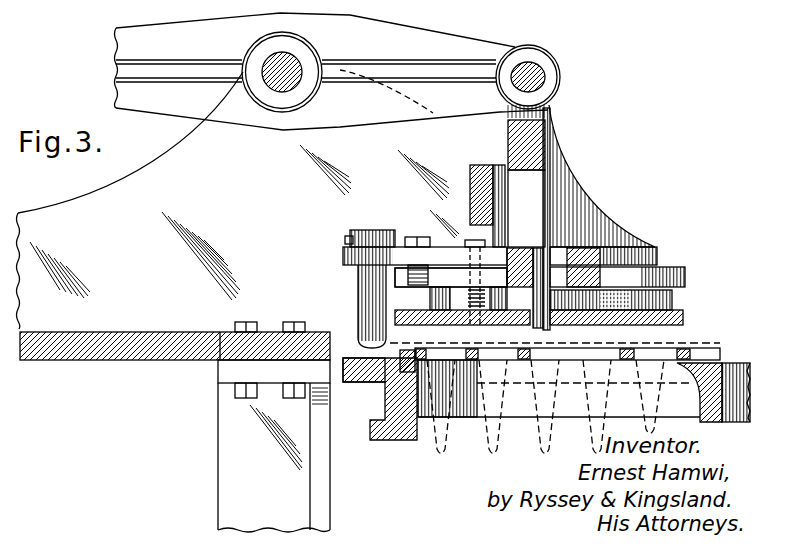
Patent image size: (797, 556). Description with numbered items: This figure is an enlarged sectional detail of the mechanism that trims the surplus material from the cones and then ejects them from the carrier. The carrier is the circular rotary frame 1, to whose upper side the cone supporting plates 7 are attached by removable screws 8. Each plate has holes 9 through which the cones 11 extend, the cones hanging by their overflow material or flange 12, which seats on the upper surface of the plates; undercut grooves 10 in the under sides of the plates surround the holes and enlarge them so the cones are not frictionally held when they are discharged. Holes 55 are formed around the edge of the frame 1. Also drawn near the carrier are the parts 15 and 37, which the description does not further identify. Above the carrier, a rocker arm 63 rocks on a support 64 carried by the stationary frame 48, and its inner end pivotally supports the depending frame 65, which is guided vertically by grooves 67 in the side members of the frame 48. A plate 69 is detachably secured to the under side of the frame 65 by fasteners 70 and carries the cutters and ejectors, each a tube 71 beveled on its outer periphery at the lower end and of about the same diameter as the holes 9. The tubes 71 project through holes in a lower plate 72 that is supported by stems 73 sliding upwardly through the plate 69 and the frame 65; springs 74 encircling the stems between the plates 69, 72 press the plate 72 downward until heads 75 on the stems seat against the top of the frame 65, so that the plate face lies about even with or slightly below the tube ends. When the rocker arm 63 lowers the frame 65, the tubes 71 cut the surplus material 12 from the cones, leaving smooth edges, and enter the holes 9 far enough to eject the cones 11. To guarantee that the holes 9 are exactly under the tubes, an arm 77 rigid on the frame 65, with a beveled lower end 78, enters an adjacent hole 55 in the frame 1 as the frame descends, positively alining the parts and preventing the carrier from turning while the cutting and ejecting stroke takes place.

The frame 1 is at (407, 398).
The cone supporting plates 7 is at (680, 346).
The removable screws 8 is at (695, 351).
The holes 9 is at (545, 350).
The undercut grooves 10 is at (635, 405).
The cones 11 is at (448, 427).
The overflow material 12 is at (650, 356).
The bolts 15 is at (315, 482).
The bracket 37 is at (372, 426).
The frame 48 is at (116, 198).
The holes 55 is at (375, 386).
The rocker arm 63 is at (452, 42).
The support 64 is at (290, 62).
The depending frame 65 is at (607, 257).
The grooves 67 is at (555, 148).
The plate 69 is at (686, 284).
The fasteners 70 is at (658, 247).
The tubes 71 is at (672, 303).
The plate 72 is at (686, 322).
The stems 73 is at (464, 325).
The springs 74 is at (554, 320).
The heads 75 is at (470, 243).
The arm 77 is at (365, 277).
The beveled lower end 78 is at (360, 340).